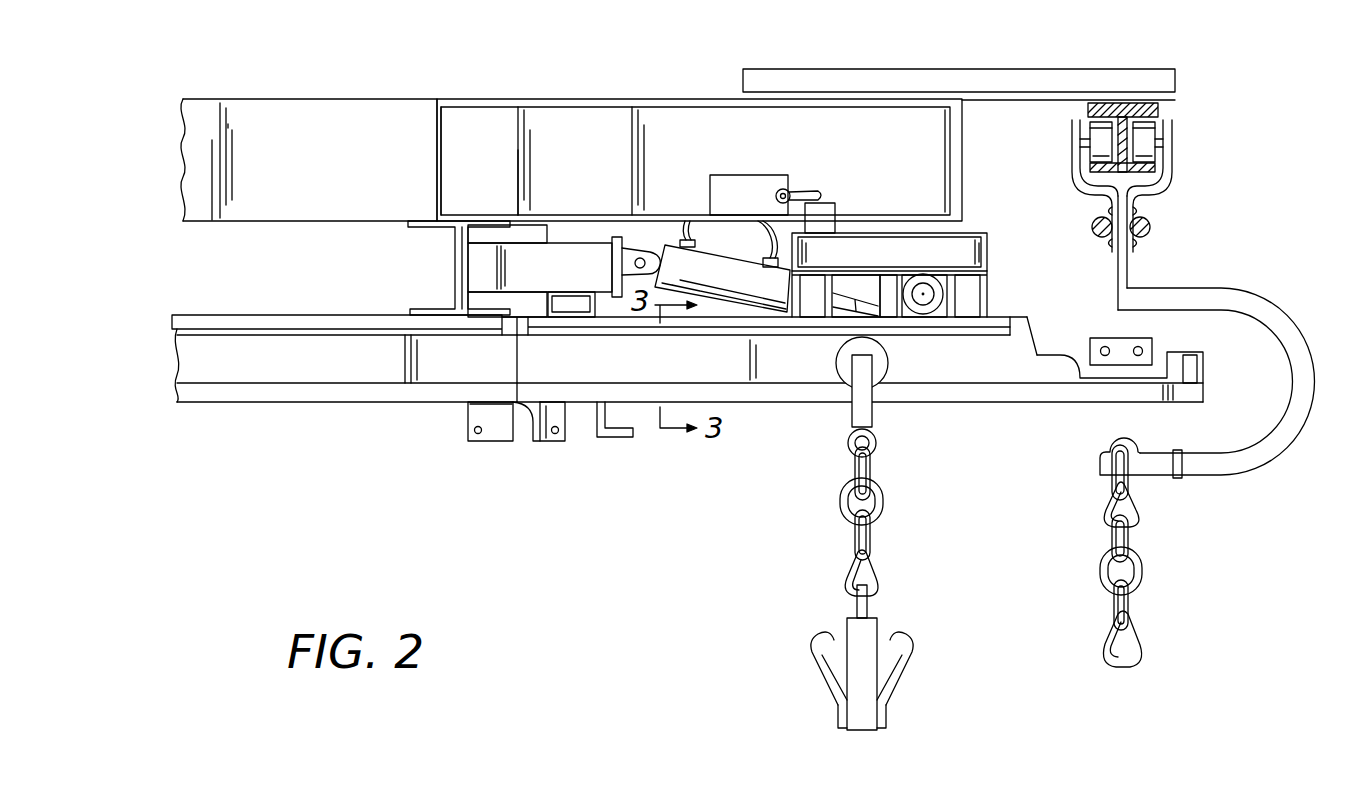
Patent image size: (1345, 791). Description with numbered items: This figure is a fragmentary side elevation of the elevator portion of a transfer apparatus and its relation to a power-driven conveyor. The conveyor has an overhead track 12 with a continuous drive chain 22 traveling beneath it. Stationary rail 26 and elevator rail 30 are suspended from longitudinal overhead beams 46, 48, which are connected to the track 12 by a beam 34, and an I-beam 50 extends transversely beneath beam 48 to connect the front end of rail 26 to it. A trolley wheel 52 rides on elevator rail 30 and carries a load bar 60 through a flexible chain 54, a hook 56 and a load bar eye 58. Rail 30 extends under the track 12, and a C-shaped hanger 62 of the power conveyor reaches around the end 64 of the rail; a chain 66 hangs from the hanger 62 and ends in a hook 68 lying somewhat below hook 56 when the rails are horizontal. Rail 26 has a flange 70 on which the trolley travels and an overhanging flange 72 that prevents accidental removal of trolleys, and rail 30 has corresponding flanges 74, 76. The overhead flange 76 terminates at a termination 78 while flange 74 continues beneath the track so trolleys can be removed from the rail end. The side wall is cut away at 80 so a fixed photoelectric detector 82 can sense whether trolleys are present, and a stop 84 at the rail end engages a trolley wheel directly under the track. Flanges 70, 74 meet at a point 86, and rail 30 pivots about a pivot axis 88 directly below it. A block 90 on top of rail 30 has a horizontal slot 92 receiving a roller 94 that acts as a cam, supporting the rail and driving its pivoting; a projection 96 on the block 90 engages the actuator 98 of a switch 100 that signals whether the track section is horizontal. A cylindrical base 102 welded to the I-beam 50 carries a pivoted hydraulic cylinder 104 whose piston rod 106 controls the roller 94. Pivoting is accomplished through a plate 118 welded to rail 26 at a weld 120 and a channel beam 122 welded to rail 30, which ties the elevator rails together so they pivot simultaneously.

The overhead track 12 is at (1158, 110).
The drive chain 22 is at (1150, 227).
The stationary rail 26 is at (344, 280).
The elevator rail 30 is at (857, 391).
The beam 34 is at (946, 69).
The longitudinal overhead beam 46 is at (600, 100).
The longitudinal overhead beam 48 is at (329, 102).
The I-beam 50 is at (455, 244).
The trolley wheel 52 is at (888, 364).
The flexible chain 54 is at (882, 506).
The hook 56 is at (880, 587).
The load bar eye 58 is at (868, 607).
The load bar 60 is at (862, 685).
The C-shaped hanger 62 is at (1242, 290).
The end of rail 64 is at (1203, 393).
The chain 66 is at (1124, 545).
The hook 68 is at (1110, 668).
The flange 70 is at (232, 384).
The overhanging flange 72 is at (333, 331).
The flange 74 is at (672, 386).
The overhead flange 76 is at (676, 326).
The termination 78 is at (1029, 320).
The cut-away 80 is at (1080, 354).
The photoelectric detector 82 is at (1124, 338).
The stop 84 is at (1197, 367).
The point 86 is at (520, 378).
The pivot axis 88 is at (525, 440).
The block 90 is at (986, 252).
The slot 92 is at (847, 278).
The roller 94 is at (940, 300).
The projection 96 is at (834, 206).
The actuator 98 is at (820, 194).
The switch 100 is at (775, 148).
The cylindrical base 102 is at (545, 260).
The hydraulic cylinder 104 is at (733, 271).
The piston rod 106 is at (852, 303).
The plate 118 is at (508, 432).
The weld 120 is at (480, 407).
The channel beam 122 is at (615, 440).